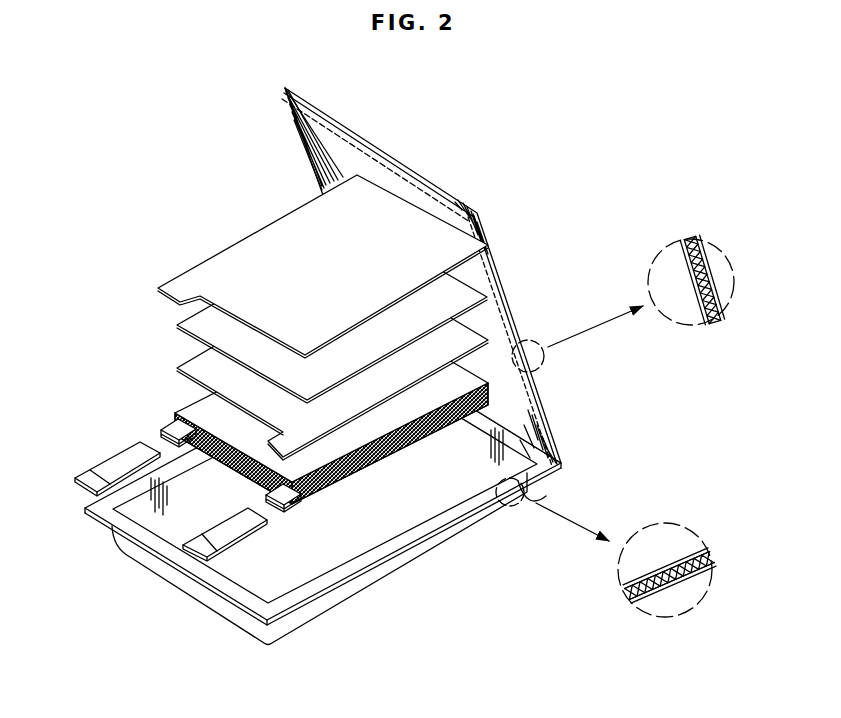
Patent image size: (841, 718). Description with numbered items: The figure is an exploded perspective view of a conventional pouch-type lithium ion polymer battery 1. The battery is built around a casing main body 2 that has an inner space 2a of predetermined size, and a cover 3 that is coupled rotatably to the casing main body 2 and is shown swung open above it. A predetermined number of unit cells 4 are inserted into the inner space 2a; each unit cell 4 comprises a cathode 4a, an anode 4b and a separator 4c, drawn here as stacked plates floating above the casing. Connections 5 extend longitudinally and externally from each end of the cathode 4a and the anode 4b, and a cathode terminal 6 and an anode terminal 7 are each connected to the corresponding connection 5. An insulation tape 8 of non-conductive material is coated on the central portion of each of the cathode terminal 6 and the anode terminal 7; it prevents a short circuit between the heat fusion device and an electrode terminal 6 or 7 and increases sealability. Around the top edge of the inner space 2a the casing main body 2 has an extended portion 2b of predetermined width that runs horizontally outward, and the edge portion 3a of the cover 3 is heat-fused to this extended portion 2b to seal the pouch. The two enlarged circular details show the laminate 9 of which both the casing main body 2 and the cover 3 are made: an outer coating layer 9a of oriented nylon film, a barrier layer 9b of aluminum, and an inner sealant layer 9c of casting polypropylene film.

The lithium ion polymer battery 1 is at (35, 76).
The casing main body 2 is at (223, 602).
The inner space 2a is at (337, 550).
The extended portion 2b is at (160, 552).
The cover 3 is at (510, 335).
The edge portion 3a is at (404, 178).
The unit cell 4 is at (196, 241).
The cathode 4a is at (272, 227).
The anode 4b is at (193, 376).
The separator 4c is at (193, 330).
The connection 5 is at (160, 418).
The cathode terminal 6 is at (77, 483).
The anode terminal 7 is at (207, 557).
The insulation tape 8 is at (110, 468).
The laminate of casing main body and cover 9 is at (556, 412).
The outer coating layer 9a is at (714, 240).
The barrier layer 9b is at (705, 273).
The inner sealant layer 9c is at (719, 303).